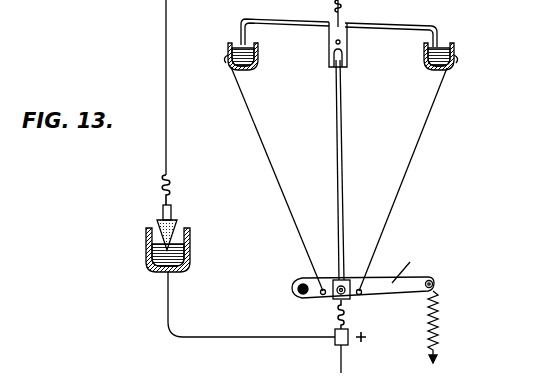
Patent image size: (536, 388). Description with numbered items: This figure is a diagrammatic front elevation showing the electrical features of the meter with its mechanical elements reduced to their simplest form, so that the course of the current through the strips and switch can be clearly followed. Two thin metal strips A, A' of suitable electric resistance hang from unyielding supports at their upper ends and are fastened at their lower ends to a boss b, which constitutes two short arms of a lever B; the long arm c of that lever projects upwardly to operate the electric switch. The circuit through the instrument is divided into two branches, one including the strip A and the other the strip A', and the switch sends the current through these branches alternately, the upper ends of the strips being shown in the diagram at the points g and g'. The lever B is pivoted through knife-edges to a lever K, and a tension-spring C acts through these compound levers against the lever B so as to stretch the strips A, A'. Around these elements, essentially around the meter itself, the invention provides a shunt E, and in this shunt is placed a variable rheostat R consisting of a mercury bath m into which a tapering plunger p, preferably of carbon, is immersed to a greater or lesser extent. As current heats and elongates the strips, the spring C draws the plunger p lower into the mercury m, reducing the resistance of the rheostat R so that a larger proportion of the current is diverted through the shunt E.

The shunt E is at (248, 168).
The tapering plunger p is at (178, 226).
The variable rheostat R is at (157, 250).
The mercury bath m is at (186, 256).
The long arm of lever B c is at (346, 170).
The mercury cup g is at (246, 56).
The mercury cup g' is at (434, 57).
The metal strip A is at (278, 181).
The metal strip A' is at (402, 181).
The lever B is at (363, 275).
The lever K is at (401, 270).
The boss b is at (348, 300).
The tension-spring C is at (440, 327).